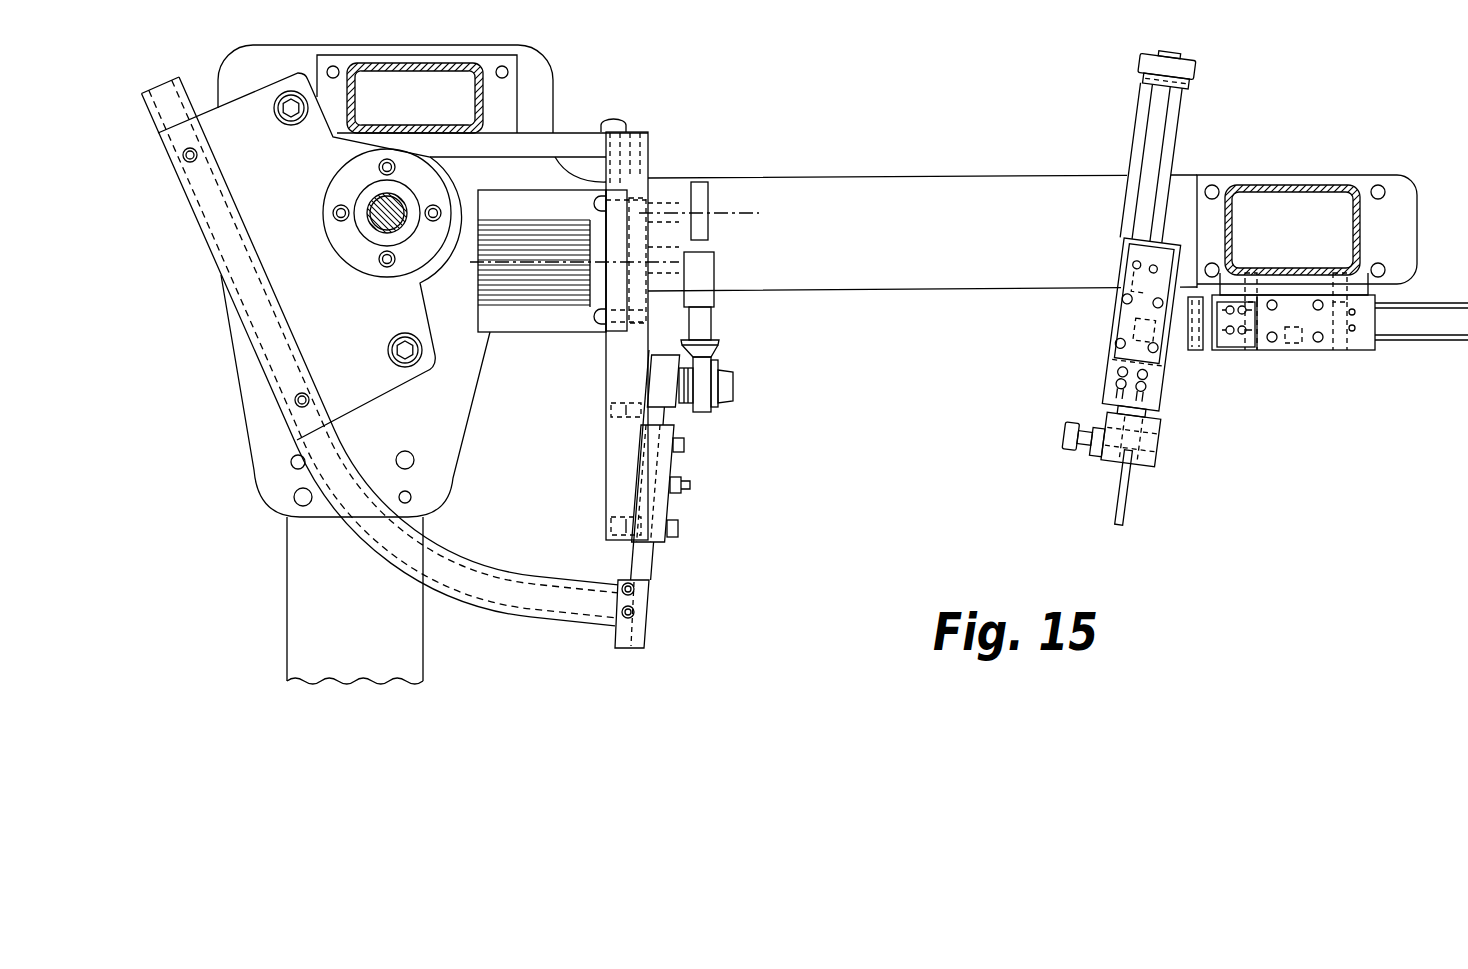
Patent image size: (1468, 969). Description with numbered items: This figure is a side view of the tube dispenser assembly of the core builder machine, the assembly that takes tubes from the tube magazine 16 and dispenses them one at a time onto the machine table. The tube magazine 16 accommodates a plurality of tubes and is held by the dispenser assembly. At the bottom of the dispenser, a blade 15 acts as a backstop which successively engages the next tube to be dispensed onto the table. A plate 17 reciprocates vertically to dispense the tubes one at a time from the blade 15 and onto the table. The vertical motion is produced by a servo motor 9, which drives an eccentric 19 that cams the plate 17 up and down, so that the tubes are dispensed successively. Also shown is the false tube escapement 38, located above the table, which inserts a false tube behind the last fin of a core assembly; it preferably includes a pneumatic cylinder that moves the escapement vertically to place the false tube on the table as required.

The servo motor 9 is at (538, 338).
The blade 15 is at (643, 648).
The tube magazine 16 is at (207, 271).
The plate 17 is at (655, 548).
The eccentric 19 is at (729, 356).
The false tube escapement 38 is at (1125, 133).